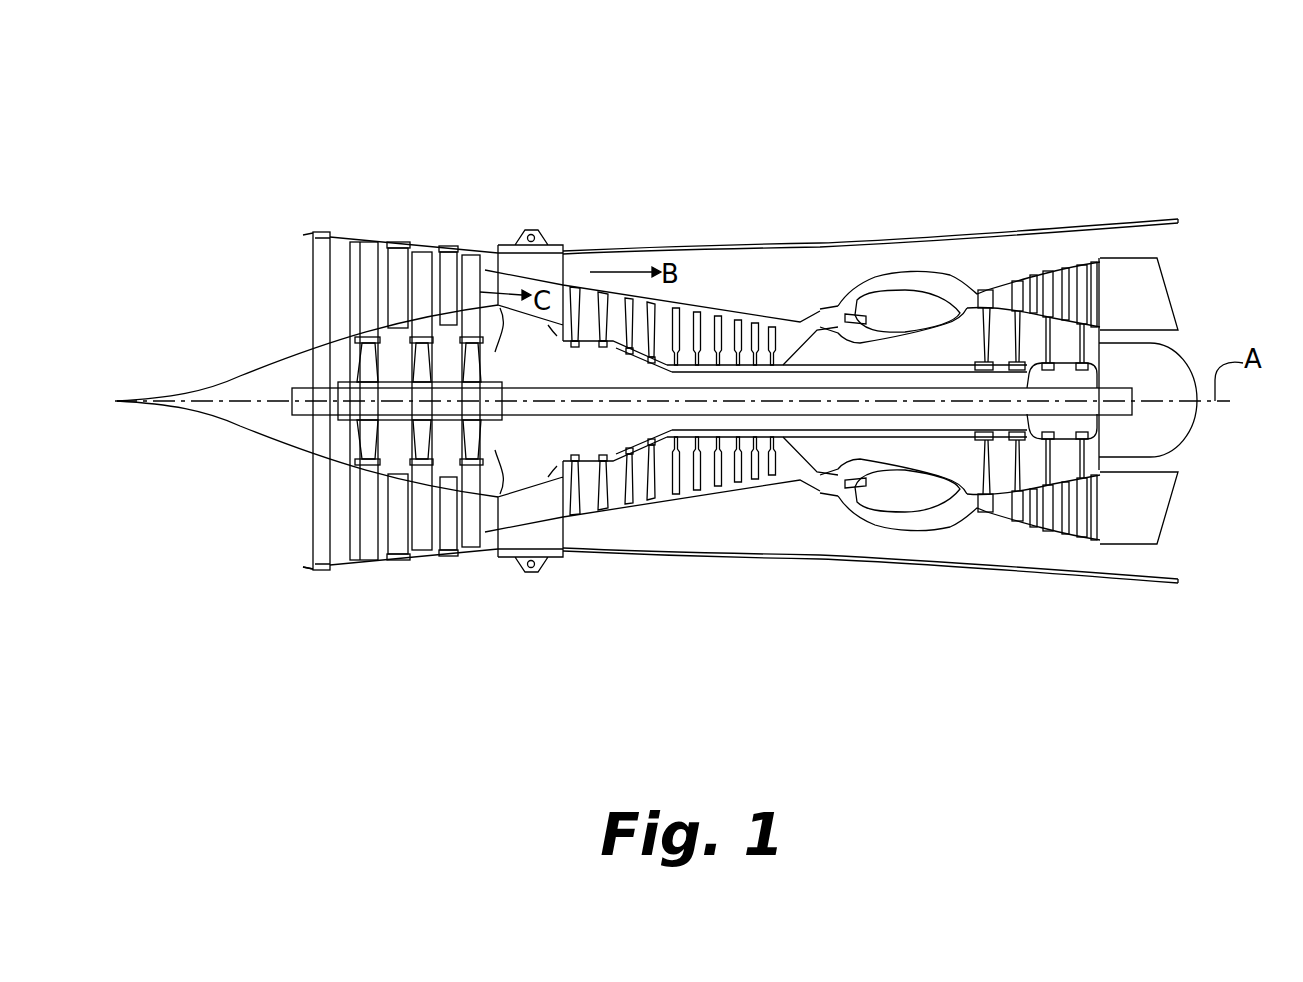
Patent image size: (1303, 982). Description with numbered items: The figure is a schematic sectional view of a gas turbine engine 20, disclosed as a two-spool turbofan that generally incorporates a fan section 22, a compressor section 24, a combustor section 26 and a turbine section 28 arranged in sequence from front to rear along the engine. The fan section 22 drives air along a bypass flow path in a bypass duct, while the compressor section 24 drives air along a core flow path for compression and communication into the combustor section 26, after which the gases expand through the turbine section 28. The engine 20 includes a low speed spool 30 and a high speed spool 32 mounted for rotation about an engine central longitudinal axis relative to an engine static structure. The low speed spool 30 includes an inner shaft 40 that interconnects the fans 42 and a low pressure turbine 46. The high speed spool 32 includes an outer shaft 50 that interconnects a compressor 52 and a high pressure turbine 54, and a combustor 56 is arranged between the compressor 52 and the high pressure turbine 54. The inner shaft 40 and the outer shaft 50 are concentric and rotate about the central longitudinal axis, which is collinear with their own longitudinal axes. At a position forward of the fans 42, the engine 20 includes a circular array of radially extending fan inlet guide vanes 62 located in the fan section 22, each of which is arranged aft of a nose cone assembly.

The gas turbine engine 20 is at (228, 108).
The fan section 22 is at (310, 212).
The compressor section 24 is at (568, 215).
The combustor section 26 is at (972, 215).
The turbine section 28 is at (1112, 215).
The low speed spool 30 is at (1113, 423).
The high speed spool 32 is at (804, 445).
The inner shaft 40 is at (552, 403).
The fans 42 is at (472, 540).
The low pressure turbine 46 is at (1087, 300).
The outer shaft 50 is at (813, 340).
The compressor 52 is at (695, 462).
The high pressure turbine 54 is at (1021, 495).
The combustor 56 is at (895, 493).
The fan inlet guide vanes 62 is at (340, 285).